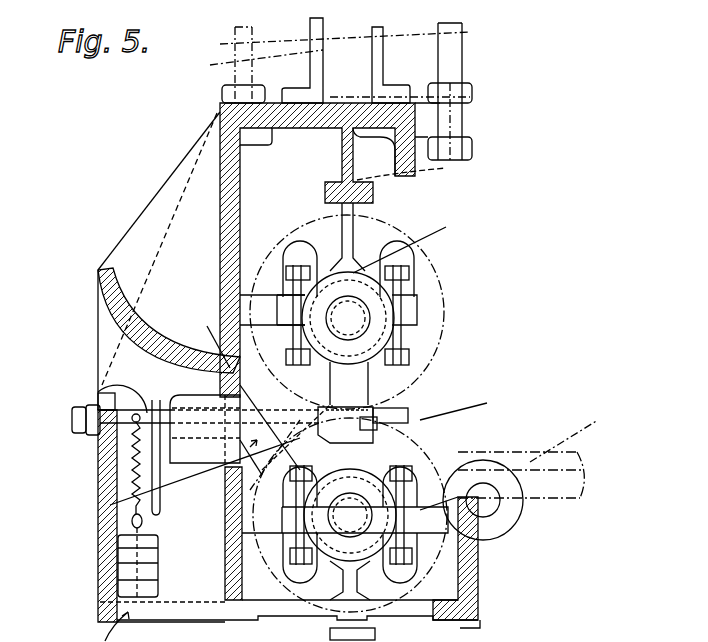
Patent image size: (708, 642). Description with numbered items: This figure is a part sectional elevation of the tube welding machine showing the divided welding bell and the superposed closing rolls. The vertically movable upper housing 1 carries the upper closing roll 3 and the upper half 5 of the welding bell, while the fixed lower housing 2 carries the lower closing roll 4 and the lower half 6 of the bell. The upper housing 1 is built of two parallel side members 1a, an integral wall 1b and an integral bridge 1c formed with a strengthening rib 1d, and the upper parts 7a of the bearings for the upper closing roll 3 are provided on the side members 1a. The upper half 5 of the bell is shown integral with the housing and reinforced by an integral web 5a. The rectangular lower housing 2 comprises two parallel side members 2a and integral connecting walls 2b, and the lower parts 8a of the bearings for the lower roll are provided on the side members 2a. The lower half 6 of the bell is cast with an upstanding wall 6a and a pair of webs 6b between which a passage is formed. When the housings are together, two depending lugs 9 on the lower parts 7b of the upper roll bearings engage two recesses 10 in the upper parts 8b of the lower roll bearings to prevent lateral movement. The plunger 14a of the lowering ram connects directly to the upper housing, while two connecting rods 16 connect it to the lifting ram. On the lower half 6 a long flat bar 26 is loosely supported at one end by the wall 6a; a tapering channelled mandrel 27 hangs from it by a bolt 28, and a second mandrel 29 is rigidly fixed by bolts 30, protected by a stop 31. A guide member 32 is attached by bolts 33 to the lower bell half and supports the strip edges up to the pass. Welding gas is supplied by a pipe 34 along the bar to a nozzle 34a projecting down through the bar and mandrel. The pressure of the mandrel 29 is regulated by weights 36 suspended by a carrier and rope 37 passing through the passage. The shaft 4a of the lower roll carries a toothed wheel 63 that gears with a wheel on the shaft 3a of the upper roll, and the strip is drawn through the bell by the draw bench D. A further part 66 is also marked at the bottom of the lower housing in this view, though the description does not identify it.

The upper housing 1 is at (318, 250).
The side members 1a is at (292, 172).
The wall 1b is at (240, 228).
The bridge 1c is at (318, 100).
The strengthening rib 1d is at (420, 177).
The lower housing 2 is at (297, 543).
The side members 2a is at (436, 570).
The connecting walls 2b is at (480, 585).
The upper closing roll 3 is at (443, 281).
The shaft of the upper roll 3a is at (420, 330).
The lower closing roll 4 is at (570, 486).
The shaft of the lower roll 4a is at (500, 521).
The upper half of the welding bell 5 is at (123, 312).
The web 5a is at (143, 215).
The lower half of the welding bell 6 is at (110, 505).
The upstanding wall 6a is at (108, 440).
The webs 6b is at (180, 562).
The upper parts of the bearings 7a is at (425, 241).
The lower parts of the upper roll bearings 7b is at (372, 333).
The lower parts of the bearings 8a is at (350, 552).
The upper parts of the bearings 8b is at (430, 452).
The depending lugs 9 is at (383, 388).
The recesses 10 is at (420, 410).
The plunger 14a is at (460, 62).
The connecting rods 16 is at (222, 62).
The flat bar 26 is at (98, 395).
The mandrel 27 is at (185, 396).
The bolt 28 is at (220, 445).
The second mandrel 29 is at (491, 408).
The bolts 30 is at (322, 408).
The stop 31 is at (470, 413).
The guide member 32 is at (241, 480).
The bolts 33 is at (273, 508).
The pipe 34 is at (150, 460).
The nozzle 34a is at (170, 552).
The weights 36 is at (128, 570).
The carrier and rope 37 is at (150, 474).
The toothed wheel 63 is at (282, 633).
The opening 66 is at (97, 627).
The draw bench D is at (571, 432).